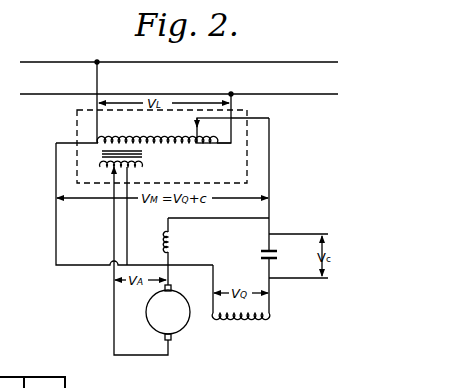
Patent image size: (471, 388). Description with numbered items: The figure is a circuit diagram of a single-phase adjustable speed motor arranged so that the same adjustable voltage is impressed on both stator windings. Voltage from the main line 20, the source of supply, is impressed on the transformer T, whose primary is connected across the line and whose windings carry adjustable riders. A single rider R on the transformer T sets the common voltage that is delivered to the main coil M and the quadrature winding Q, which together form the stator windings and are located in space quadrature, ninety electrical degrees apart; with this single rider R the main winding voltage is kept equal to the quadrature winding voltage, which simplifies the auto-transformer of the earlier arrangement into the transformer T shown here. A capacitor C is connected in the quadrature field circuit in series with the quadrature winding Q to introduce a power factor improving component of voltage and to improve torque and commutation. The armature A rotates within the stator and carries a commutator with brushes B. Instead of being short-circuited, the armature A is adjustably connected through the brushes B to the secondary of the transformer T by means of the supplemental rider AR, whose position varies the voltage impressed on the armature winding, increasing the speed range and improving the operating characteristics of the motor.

The main line 20 is at (281, 64).
The transformer T is at (151, 122).
The single rider (M+Q) R is at (233, 118).
The supplemental rider AR is at (108, 216).
The main coil M is at (216, 251).
The capacitor C is at (279, 215).
The quadrature winding Q is at (240, 302).
The armature A is at (168, 312).
The brushes B is at (174, 314).